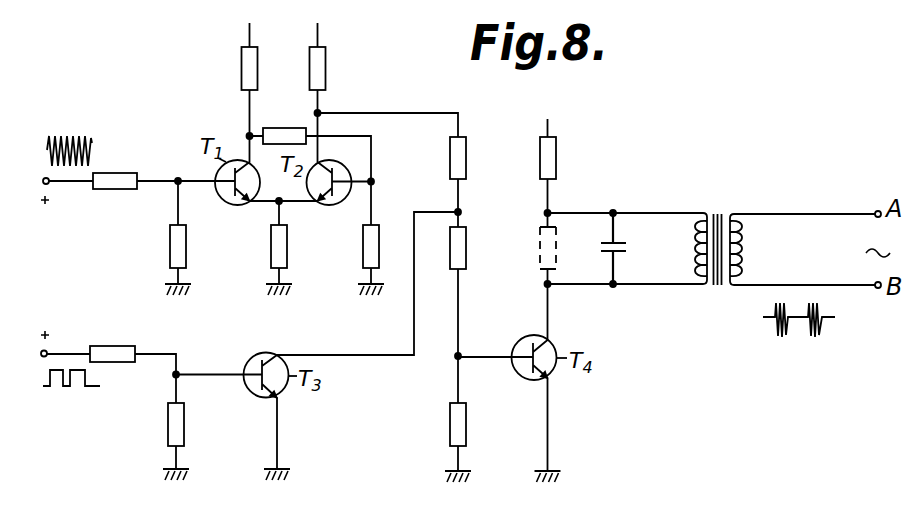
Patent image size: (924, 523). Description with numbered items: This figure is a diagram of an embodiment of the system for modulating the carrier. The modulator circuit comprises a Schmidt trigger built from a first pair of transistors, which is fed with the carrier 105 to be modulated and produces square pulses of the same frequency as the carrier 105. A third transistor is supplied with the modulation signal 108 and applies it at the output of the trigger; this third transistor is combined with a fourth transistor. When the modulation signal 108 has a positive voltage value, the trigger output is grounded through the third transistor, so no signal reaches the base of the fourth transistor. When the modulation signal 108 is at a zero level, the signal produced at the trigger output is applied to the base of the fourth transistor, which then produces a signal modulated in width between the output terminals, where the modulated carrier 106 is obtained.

The carrier 105 is at (92, 143).
The modulated carrier 106 is at (820, 325).
The modulation signal 108 is at (87, 375).